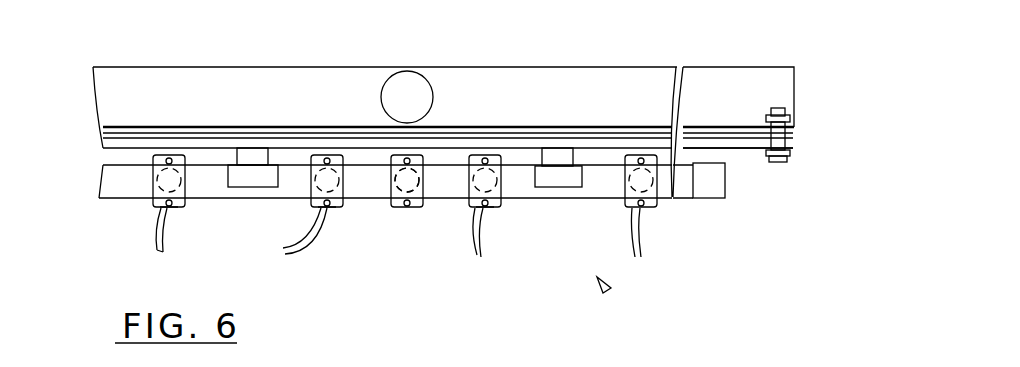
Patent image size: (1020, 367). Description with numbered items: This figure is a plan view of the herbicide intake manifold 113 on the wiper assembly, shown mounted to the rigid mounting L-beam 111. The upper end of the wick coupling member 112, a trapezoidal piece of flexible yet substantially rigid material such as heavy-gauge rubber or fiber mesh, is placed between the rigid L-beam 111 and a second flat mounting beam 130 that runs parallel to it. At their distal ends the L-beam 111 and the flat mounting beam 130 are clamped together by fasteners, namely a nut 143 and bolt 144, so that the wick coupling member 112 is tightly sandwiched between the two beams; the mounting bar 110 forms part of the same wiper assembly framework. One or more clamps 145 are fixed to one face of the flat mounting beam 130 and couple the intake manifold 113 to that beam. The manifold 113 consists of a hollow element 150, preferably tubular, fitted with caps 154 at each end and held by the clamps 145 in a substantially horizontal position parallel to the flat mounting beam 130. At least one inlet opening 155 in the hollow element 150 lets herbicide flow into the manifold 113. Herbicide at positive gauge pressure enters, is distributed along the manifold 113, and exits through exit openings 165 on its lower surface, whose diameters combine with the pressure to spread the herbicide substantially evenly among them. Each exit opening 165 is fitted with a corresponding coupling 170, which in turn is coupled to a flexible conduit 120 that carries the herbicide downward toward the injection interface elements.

The mounting bar 110 is at (424, 73).
The mounting L-beam 111 is at (550, 88).
The wick coupling member 112 is at (793, 137).
The intake manifold 113 is at (608, 292).
The conduit 120 is at (157, 250).
The flat mounting beam 130 is at (740, 150).
The nut 143 is at (790, 116).
The bolt 144 is at (782, 157).
The clamp 145 is at (250, 165).
The hollow element 150 is at (297, 170).
The cap 154 is at (715, 193).
The inlet opening 155 is at (412, 183).
The exit opening 165 is at (157, 182).
The coupling 170 is at (155, 203).